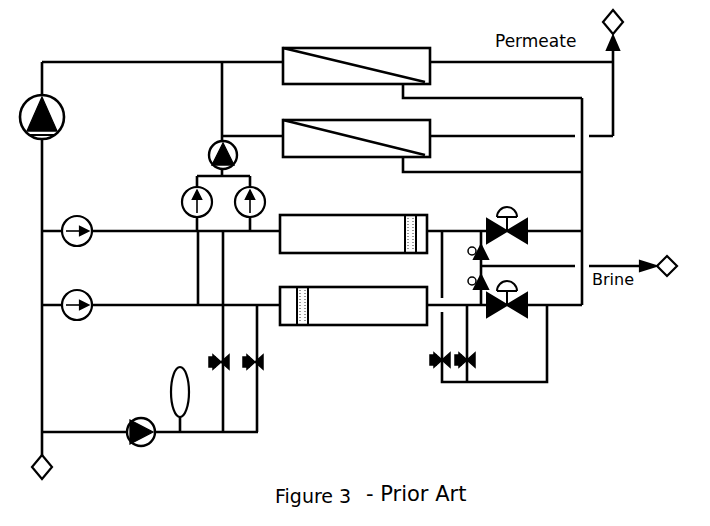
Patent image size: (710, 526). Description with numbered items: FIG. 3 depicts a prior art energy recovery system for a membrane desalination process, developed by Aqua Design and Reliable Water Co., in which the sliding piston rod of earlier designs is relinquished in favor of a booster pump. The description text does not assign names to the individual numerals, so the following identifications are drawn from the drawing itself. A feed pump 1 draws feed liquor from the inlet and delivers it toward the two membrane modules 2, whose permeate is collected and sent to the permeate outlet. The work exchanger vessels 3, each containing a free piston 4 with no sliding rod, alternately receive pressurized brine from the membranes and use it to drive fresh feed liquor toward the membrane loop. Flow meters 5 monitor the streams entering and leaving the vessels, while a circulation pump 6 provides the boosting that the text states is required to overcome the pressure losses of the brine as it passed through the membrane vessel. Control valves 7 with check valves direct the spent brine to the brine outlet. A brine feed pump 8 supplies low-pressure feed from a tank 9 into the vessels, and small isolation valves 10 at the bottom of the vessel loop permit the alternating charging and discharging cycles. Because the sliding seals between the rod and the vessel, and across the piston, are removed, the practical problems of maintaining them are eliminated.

The feed pump 1 is at (51, 117).
The membrane module 2 is at (356, 102).
The work exchanger vessel 3 is at (353, 258).
The piston 4 is at (356, 258).
The flow meter 5 is at (163, 253).
The circulation pump 6 is at (229, 155).
The control valve 7 is at (503, 256).
The brine feed pump 8 is at (120, 417).
The tank 9 is at (180, 380).
The valve 10 is at (465, 361).